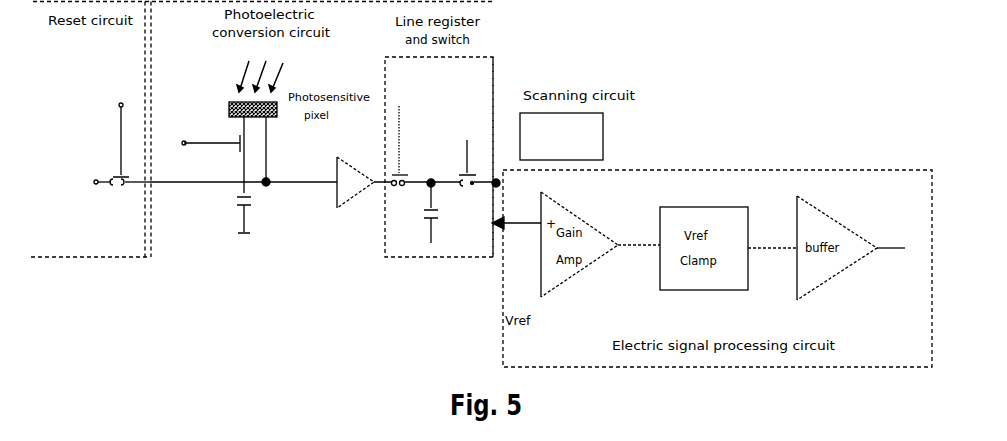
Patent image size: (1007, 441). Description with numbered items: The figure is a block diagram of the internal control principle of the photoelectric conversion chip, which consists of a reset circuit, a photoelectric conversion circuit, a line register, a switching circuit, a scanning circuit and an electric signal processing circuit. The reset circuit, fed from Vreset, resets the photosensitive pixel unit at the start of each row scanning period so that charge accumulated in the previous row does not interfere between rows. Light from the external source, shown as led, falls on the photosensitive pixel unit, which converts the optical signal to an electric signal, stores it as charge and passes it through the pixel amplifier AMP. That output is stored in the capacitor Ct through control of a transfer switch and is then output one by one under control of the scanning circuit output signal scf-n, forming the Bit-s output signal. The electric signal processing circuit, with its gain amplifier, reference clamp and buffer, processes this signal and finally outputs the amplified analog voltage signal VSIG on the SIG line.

The reset voltage switch Vreset is at (95, 181).
The lighting pulse LED signal led is at (260, 71).
The pixel amplifier AMP is at (355, 182).
The capacitor Ct is at (419, 215).
The output signal of the scanning circuit scf-n is at (561, 136).
The Bit-s output signal Bit-s is at (507, 157).
The VSIG signal VSIG is at (841, 246).
The output signal line SIG is at (901, 248).